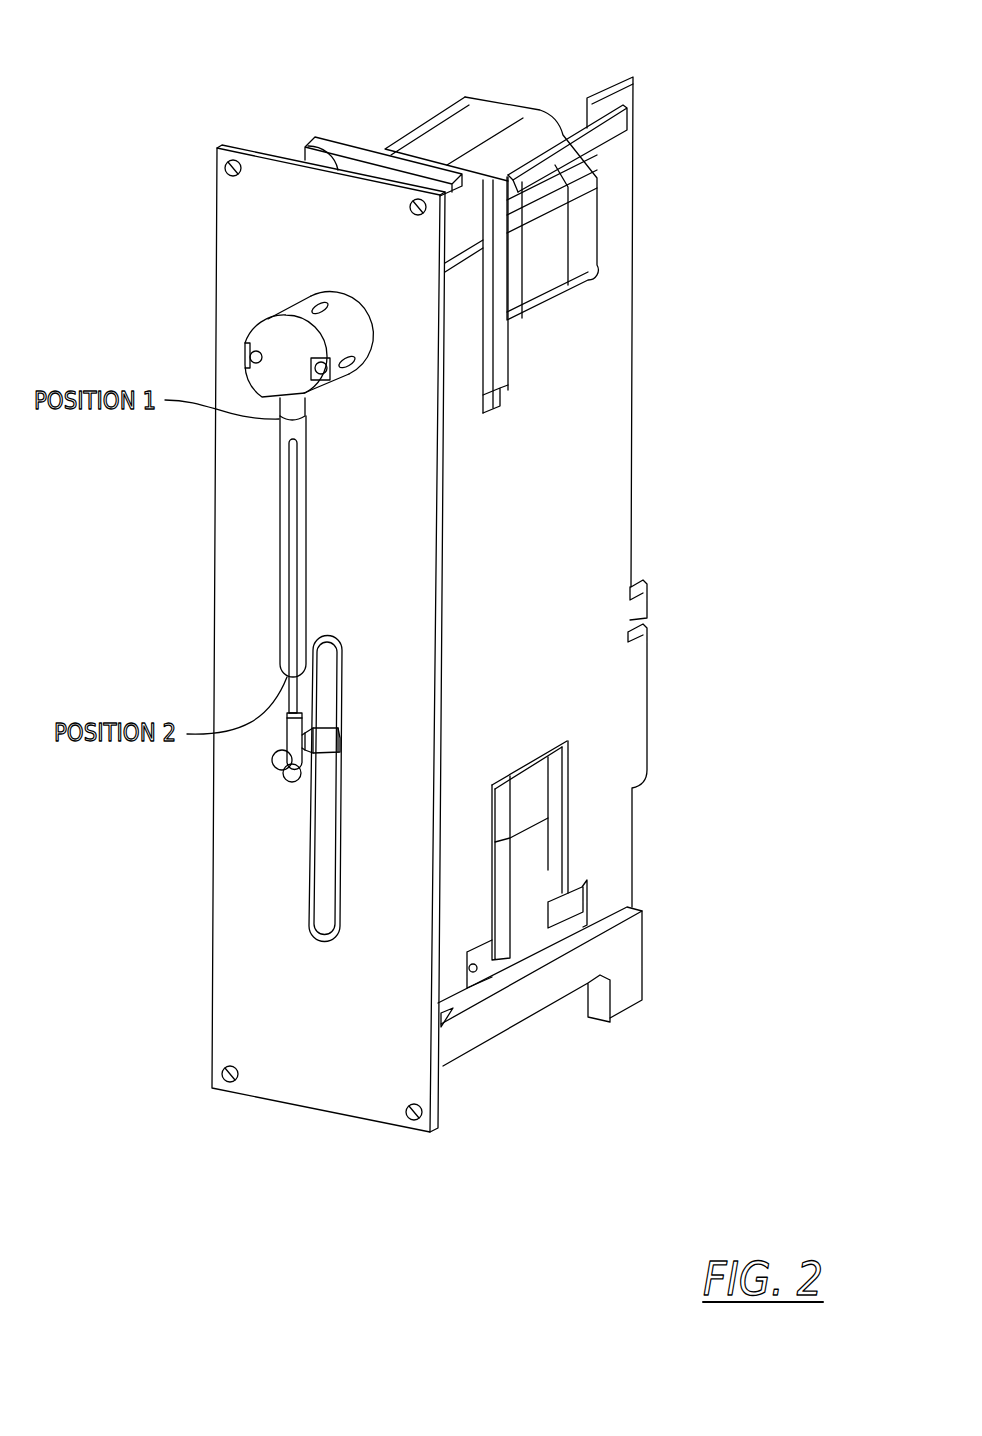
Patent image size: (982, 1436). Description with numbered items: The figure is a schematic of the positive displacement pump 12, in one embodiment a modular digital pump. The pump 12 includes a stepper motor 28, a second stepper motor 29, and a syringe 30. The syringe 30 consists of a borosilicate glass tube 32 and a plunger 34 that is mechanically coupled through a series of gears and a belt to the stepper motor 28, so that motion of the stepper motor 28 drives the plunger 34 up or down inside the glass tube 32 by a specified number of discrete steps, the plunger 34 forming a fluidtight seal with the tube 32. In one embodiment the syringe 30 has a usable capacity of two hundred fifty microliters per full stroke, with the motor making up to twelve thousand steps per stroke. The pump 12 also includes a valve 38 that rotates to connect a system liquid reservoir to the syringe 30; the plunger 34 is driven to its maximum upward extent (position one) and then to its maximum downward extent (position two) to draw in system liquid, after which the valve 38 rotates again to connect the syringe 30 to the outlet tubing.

The positive displacement pump 12 is at (779, 173).
The stepper motor 28 is at (532, 952).
The stepper motor 29 is at (514, 103).
The syringe 30 is at (215, 599).
The borosilicate glass tube 32 is at (285, 587).
The plunger 34 is at (296, 655).
The valve 38 is at (246, 331).